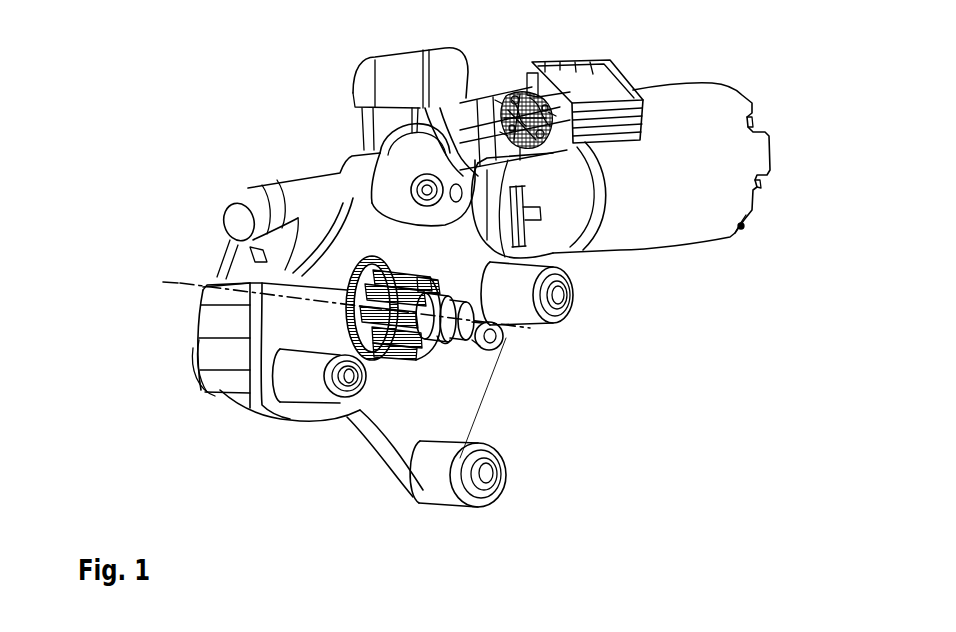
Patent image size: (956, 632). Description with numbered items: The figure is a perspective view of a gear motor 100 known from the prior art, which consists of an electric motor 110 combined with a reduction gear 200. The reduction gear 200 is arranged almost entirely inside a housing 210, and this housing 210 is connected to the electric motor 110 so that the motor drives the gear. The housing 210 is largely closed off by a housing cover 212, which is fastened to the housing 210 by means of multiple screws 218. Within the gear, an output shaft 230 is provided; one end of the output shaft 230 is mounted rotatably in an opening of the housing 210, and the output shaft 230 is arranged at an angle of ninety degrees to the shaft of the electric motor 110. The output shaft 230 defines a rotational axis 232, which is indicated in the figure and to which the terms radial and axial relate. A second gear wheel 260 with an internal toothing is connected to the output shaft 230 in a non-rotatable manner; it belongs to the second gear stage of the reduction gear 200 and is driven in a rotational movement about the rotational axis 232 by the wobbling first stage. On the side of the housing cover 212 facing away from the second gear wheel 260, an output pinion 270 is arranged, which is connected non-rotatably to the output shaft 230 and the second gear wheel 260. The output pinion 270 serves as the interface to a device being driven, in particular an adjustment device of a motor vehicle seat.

The gear motor 100 is at (207, 93).
The electric motor 110 is at (682, 104).
The reduction gear 200 is at (258, 360).
The housing 210 is at (220, 318).
The housing cover 212 is at (360, 410).
The screws 218 is at (424, 190).
The output shaft 230 is at (468, 330).
The rotational axis 232 is at (173, 285).
The second gear wheel 260 is at (380, 277).
The output pinion 270 is at (423, 350).